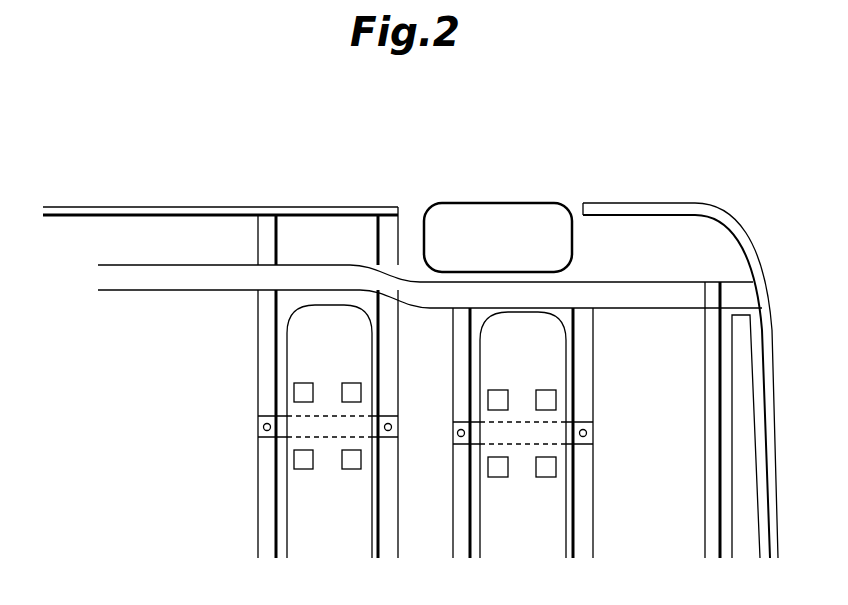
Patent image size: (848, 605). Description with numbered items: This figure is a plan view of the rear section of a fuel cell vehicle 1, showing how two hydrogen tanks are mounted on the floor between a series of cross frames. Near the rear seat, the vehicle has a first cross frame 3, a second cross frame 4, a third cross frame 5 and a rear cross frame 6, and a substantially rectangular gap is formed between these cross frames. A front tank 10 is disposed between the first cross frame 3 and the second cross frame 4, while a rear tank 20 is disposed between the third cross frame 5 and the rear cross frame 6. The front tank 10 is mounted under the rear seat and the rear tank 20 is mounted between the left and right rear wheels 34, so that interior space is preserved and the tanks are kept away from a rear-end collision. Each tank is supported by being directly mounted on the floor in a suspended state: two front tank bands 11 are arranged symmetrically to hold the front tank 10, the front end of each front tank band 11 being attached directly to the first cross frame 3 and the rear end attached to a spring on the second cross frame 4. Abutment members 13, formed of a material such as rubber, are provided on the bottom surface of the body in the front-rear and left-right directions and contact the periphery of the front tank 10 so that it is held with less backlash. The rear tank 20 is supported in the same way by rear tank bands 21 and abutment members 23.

The fuel cell vehicle 1 is at (662, 125).
The first cross frame 3 is at (262, 228).
The second cross frame 4 is at (391, 222).
The third cross frame 5 is at (459, 322).
The rear cross frame 6 is at (582, 372).
The front tank 10 is at (335, 310).
The front tank band 11 is at (280, 420).
The abutment member 13 is at (304, 390).
The rear tank 20 is at (555, 325).
The rear tank band 21 is at (568, 424).
The abutment member 23 is at (546, 397).
The rear wheel 34 is at (458, 228).